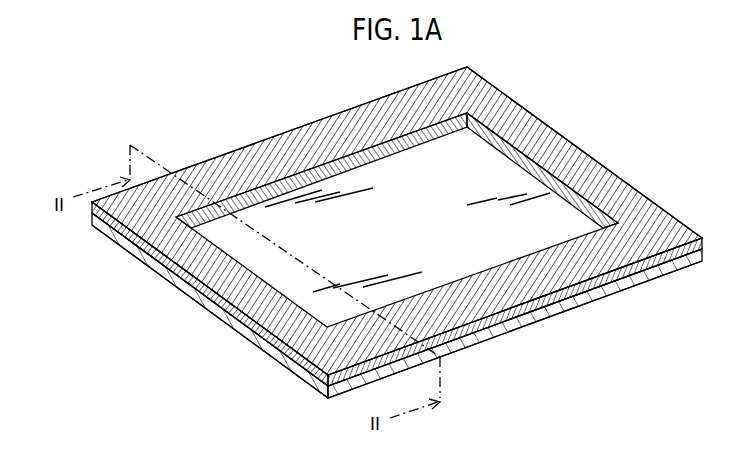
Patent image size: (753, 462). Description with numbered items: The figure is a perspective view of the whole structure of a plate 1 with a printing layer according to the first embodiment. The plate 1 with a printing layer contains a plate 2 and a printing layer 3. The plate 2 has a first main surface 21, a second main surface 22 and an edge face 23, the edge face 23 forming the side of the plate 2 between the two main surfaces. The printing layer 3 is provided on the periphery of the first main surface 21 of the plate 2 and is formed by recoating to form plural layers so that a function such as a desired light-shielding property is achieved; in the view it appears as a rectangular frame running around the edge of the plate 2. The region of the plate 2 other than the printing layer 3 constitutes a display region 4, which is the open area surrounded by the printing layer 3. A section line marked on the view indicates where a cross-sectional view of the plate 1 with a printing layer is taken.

The plate with a printing layer 1 is at (243, 121).
The plate 2 is at (208, 302).
The printing layer 3 is at (568, 158).
The display region 4 is at (413, 228).
The first main surface 21 is at (367, 265).
The second main surface 22 is at (488, 330).
The edge face 23 is at (580, 302).